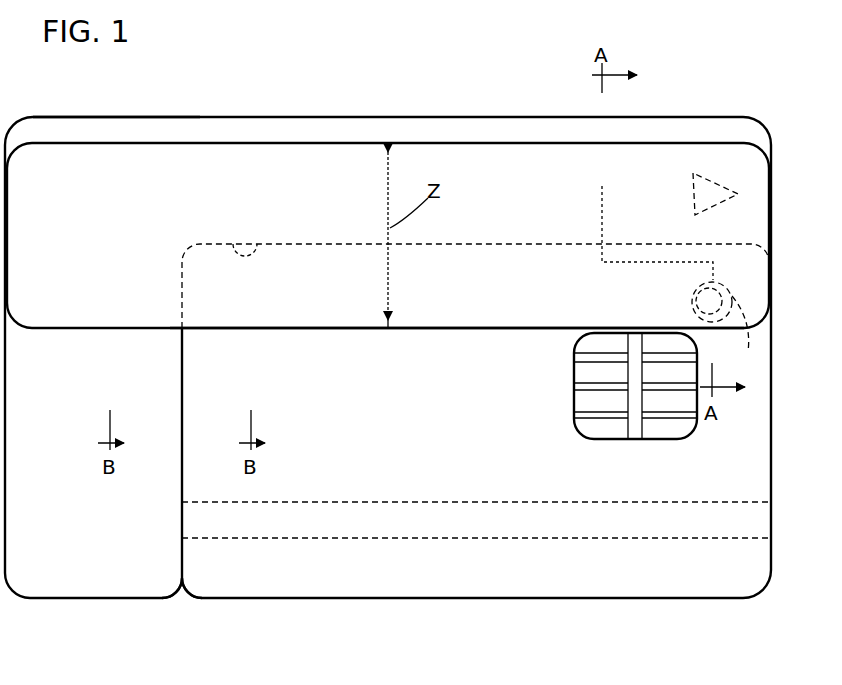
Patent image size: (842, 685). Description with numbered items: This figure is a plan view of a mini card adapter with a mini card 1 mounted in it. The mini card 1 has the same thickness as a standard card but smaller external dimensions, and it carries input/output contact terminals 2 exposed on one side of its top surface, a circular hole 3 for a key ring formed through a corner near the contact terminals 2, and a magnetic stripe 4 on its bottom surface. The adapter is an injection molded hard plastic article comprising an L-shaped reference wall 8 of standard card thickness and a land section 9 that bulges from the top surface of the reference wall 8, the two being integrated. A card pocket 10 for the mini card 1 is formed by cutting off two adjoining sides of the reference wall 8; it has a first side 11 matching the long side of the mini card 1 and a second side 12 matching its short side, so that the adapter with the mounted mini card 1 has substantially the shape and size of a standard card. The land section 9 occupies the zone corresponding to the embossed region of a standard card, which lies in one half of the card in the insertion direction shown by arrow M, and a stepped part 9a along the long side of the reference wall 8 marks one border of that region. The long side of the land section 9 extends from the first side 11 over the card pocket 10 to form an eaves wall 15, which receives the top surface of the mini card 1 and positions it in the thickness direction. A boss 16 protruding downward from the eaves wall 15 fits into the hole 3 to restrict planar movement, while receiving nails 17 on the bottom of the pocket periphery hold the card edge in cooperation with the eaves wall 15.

The mini card 1 is at (368, 600).
The input/output contact terminals 2 is at (580, 428).
The circular hole 3 is at (692, 297).
The magnetic stripe 4 is at (533, 542).
The reference wall 8 is at (97, 575).
The land section 9 is at (312, 150).
The stepped part 9a is at (90, 142).
The card pocket 10 is at (187, 351).
The first side 11 is at (236, 244).
The second side 12 is at (180, 553).
The eaves wall 15 is at (322, 308).
The boss 16 is at (747, 336).
The receiving nail 17 is at (517, 250).
The card insertion direction M is at (710, 183).